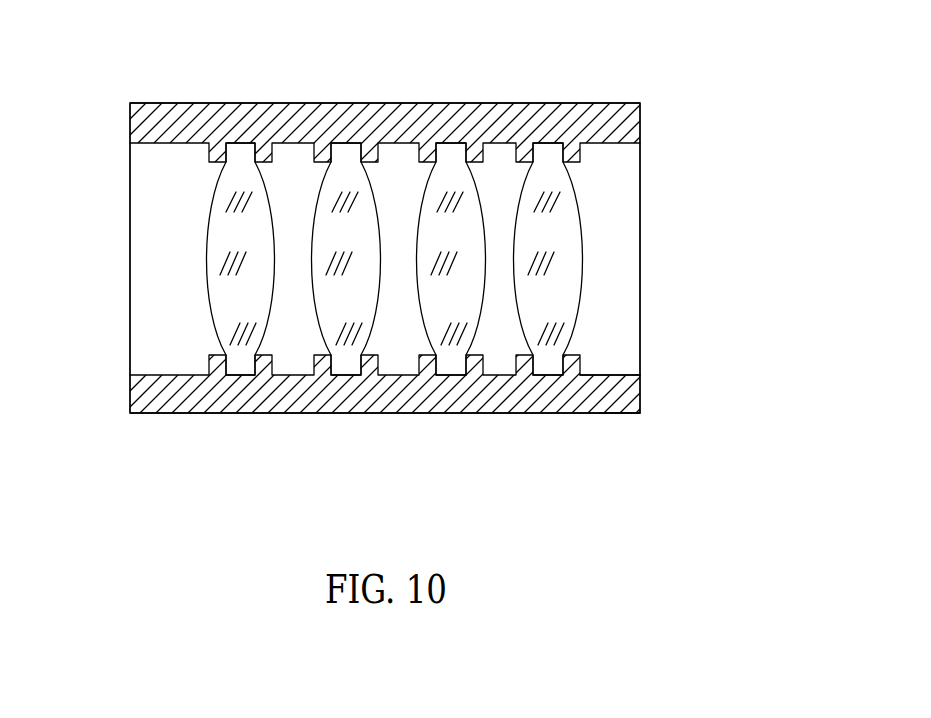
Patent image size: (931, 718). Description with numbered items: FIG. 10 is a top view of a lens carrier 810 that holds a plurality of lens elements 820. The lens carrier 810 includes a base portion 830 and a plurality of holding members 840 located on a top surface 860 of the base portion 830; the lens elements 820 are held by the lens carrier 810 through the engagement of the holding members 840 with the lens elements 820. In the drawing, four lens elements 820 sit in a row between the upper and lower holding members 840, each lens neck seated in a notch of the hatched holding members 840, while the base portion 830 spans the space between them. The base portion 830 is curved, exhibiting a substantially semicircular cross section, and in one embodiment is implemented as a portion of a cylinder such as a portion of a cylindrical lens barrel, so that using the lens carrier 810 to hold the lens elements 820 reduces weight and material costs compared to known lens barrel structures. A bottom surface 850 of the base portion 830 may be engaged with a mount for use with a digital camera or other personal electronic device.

The lens carrier 810 is at (630, 96).
The lens elements 820 is at (197, 147).
The base portion 830 is at (628, 213).
The holding members 840 is at (110, 92).
The bottom surface 850 is at (620, 360).
The top surface 860 is at (617, 423).